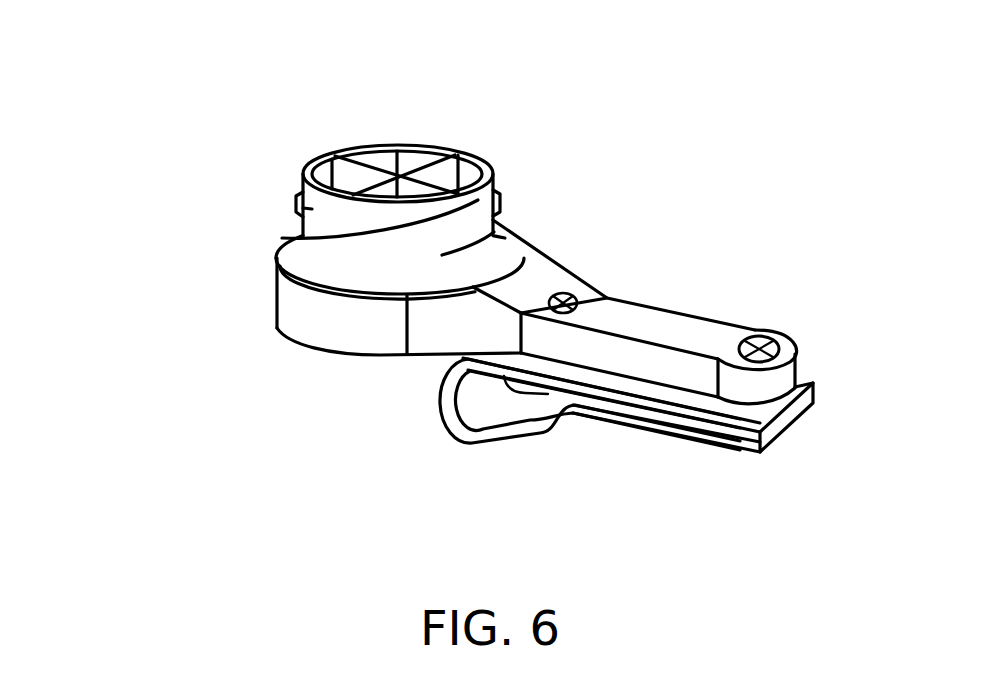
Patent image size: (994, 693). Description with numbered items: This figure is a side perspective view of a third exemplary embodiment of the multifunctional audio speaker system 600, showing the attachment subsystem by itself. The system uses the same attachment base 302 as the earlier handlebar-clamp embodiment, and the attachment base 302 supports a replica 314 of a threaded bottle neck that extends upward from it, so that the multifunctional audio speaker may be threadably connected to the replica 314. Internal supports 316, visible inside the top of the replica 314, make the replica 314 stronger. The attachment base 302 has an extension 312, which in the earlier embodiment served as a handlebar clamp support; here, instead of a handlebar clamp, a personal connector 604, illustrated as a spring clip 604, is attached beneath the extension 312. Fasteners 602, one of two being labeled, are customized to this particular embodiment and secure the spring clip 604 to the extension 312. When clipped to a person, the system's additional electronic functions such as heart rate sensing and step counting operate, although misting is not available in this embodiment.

The multifunctional audio speaker system 600 is at (226, 78).
The attachment base 302 is at (372, 340).
The extension 312 is at (638, 317).
The replica of a threaded bottle neck 314 is at (307, 168).
The internal supports 316 is at (372, 160).
The fasteners 602 is at (757, 330).
The personal connector 604 is at (535, 438).